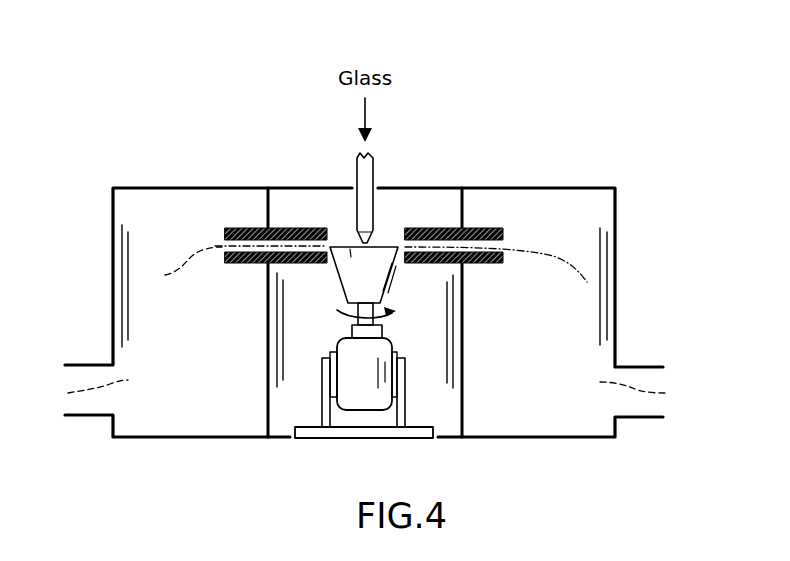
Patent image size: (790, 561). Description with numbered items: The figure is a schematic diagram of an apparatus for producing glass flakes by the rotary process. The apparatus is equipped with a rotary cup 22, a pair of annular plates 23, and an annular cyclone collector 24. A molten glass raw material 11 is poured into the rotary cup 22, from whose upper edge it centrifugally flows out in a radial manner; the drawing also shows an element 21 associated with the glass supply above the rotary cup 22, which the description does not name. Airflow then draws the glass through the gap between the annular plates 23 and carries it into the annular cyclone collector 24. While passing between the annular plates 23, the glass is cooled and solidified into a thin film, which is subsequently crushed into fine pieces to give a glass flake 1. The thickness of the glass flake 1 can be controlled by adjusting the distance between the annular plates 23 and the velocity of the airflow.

The glass flake 1 is at (96, 388).
The molten glass raw material 11 is at (393, 245).
The molten glass stream 21 is at (373, 183).
The rotary cup 22 is at (352, 245).
The annular plates 23 is at (503, 233).
The annular cyclone collector 24 is at (190, 188).